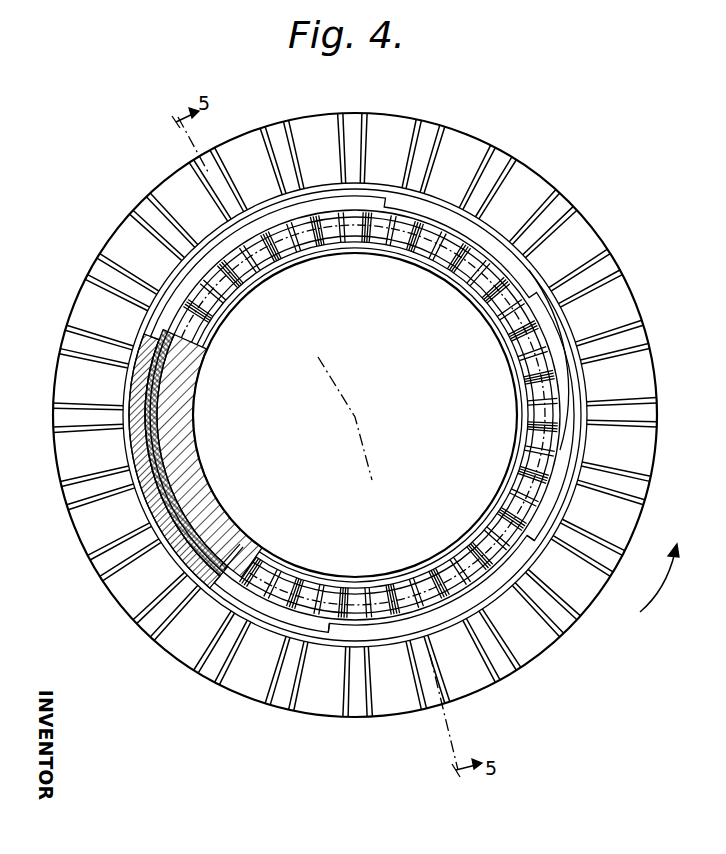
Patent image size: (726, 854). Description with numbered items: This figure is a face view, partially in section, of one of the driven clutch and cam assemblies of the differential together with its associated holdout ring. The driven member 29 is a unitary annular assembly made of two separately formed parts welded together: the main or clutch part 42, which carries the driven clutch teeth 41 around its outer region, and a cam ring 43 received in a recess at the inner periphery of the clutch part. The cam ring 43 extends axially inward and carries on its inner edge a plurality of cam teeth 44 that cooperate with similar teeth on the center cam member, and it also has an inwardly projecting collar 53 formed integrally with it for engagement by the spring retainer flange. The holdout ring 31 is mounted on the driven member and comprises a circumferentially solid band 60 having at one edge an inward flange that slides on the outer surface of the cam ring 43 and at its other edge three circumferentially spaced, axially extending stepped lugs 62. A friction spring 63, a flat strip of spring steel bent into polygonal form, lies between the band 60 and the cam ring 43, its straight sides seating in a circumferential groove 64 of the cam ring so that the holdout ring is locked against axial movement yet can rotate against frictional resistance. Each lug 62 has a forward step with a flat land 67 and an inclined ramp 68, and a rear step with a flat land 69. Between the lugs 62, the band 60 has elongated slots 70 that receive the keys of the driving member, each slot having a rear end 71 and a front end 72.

The driven member 29 is at (453, 135).
The main or clutch part 42 is at (520, 190).
The driven clutch teeth 41 is at (603, 263).
The holdout ring 31 is at (565, 316).
The cam ring 43 is at (427, 247).
The cam teeth 44 is at (463, 265).
The inwardly projecting collar 53 is at (227, 307).
The friction spring 63 is at (160, 390).
The band 60 is at (137, 445).
The circumferential groove 64 is at (193, 487).
The ramp 68 is at (563, 360).
The flat land 67 is at (570, 393).
The stepped lug 62 is at (570, 415).
The flat land 69 is at (572, 437).
The front end 72 is at (535, 518).
The rear end 71 is at (365, 645).
The elongated slot 70 is at (450, 623).